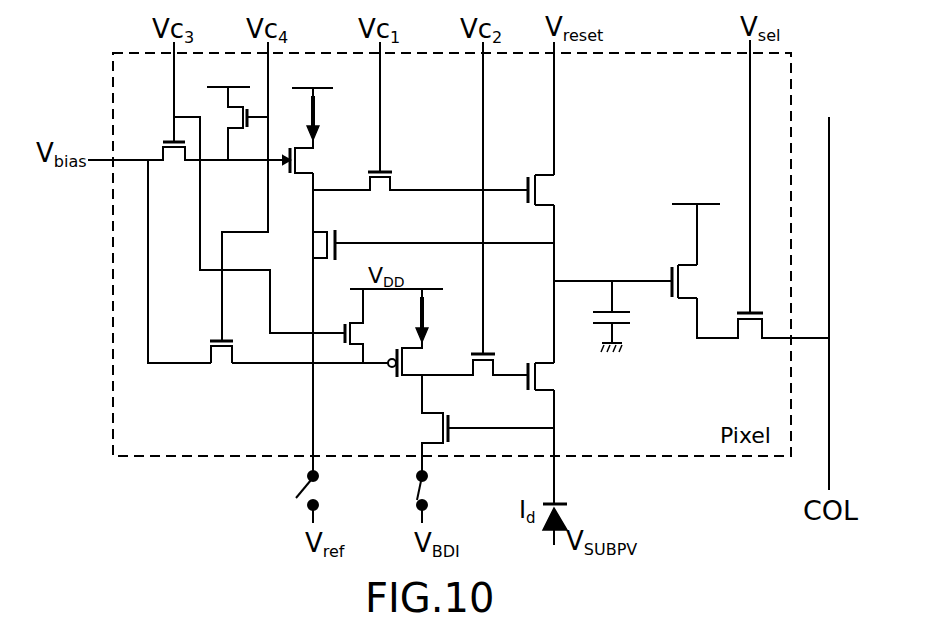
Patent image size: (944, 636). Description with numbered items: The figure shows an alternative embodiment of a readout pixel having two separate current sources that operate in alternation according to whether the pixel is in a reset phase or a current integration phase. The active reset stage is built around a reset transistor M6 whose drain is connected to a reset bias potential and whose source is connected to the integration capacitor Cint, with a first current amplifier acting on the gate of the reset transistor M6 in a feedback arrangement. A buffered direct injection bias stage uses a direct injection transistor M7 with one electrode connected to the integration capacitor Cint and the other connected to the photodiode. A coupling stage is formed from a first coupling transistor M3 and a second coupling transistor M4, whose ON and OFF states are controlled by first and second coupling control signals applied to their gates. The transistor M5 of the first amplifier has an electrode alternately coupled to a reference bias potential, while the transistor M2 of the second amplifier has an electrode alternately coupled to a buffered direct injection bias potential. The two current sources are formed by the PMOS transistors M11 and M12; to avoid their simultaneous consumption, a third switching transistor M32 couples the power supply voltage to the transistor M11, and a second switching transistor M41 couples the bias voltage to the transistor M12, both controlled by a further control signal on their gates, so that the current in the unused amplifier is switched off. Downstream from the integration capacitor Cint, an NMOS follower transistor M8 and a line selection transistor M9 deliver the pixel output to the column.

The third switching transistor M32 is at (224, 111).
The current source transistor M11 is at (324, 121).
The first coupling transistor M3 is at (386, 197).
The reset transistor M6 is at (557, 192).
The transistor of the first amplifier M5 is at (419, 247).
The second switching transistor M41 is at (233, 368).
The current source transistor M12 is at (425, 338).
The second coupling transistor M4 is at (489, 382).
The direct injection transistor M7 is at (557, 380).
The transistor of the second amplifier M2 is at (472, 426).
The integration capacitor Cint is at (630, 315).
The follower transistor M8 is at (699, 241).
The line selection transistor M9 is at (756, 342).